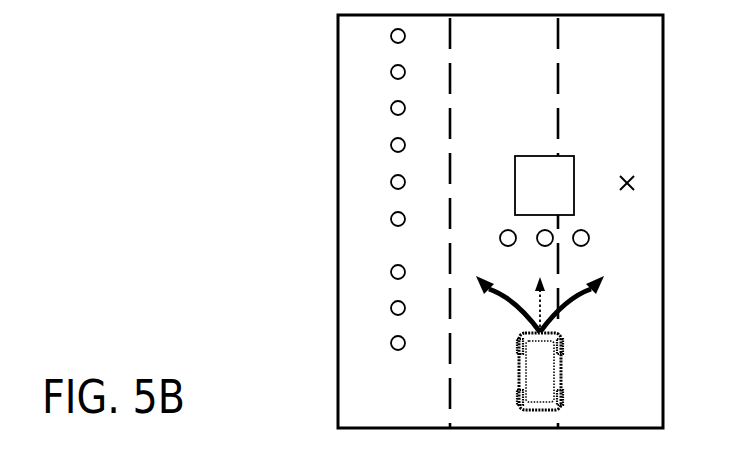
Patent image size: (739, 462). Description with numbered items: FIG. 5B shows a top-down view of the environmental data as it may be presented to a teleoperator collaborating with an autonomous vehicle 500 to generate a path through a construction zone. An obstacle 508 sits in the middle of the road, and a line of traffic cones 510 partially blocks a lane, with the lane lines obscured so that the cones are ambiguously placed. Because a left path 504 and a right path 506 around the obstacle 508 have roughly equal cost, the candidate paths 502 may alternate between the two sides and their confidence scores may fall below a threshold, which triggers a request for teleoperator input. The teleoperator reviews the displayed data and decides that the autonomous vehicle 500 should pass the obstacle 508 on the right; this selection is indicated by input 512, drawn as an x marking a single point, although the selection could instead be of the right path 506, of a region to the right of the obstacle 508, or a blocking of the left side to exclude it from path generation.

The autonomous vehicle 500 is at (518, 372).
The paths 502 is at (474, 262).
The left path 504 is at (521, 311).
The right path 506 is at (583, 297).
The obstacle 508 is at (566, 156).
The traffic cones 510 is at (391, 147).
The input 512 is at (632, 171).